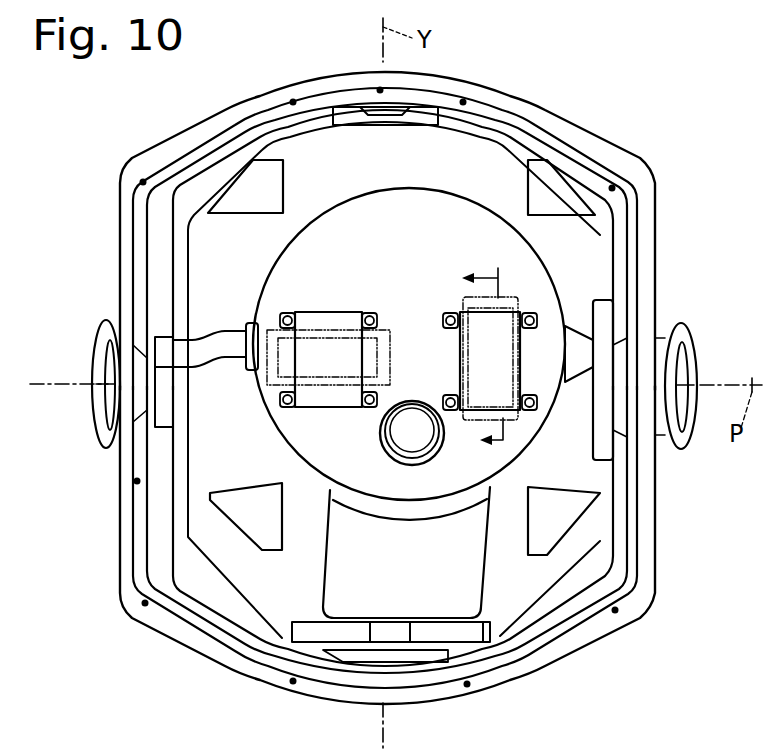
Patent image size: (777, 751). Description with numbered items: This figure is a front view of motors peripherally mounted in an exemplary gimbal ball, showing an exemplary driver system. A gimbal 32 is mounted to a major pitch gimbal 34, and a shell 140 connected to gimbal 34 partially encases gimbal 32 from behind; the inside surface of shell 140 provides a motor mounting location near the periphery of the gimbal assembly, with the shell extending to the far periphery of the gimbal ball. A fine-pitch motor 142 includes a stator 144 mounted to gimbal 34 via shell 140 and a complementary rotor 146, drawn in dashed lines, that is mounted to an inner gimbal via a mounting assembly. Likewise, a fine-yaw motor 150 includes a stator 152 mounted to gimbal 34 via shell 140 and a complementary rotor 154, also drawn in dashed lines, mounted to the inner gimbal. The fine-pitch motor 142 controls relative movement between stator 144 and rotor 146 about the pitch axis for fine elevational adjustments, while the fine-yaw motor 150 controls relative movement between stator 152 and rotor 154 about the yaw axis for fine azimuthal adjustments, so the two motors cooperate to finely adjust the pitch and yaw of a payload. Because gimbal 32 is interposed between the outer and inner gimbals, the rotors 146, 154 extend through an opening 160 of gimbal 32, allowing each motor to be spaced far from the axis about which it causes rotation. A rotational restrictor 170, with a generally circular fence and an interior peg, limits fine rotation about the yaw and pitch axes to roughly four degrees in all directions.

The gimbal 32 is at (481, 140).
The major pitch gimbal 34 is at (593, 118).
The shell 140 is at (302, 430).
The fine-pitch motor 142 is at (456, 243).
The stator 144 is at (443, 335).
The rotor 146 is at (517, 300).
The fine-yaw motor 150 is at (336, 284).
The stator 152 is at (313, 310).
The rotor 154 is at (388, 327).
The opening 160 is at (360, 205).
The rotational restrictor 170 is at (370, 432).